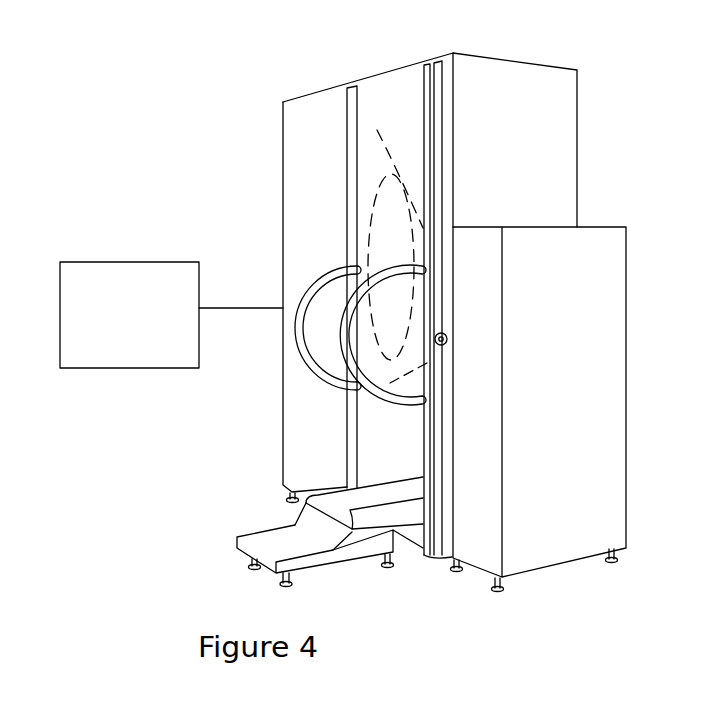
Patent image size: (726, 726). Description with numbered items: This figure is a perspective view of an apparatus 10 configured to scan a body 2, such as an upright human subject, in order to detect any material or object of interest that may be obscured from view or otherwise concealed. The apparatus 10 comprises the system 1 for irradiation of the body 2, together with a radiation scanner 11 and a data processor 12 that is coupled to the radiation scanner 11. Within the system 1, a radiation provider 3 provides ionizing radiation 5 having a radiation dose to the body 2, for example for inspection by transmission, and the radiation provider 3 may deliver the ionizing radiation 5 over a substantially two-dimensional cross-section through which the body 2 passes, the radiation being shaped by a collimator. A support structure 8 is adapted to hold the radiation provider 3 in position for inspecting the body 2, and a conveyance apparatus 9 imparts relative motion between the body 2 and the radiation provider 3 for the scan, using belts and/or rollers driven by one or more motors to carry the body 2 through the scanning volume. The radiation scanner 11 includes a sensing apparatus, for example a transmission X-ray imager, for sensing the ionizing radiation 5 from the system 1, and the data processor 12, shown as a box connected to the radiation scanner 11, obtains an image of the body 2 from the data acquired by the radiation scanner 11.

The system 1 is at (612, 170).
The body 2 is at (467, 305).
The radiation provider 3 is at (572, 350).
The ionizing radiation 5 is at (472, 339).
The support structure 8 is at (511, 87).
The conveyance apparatus 9 is at (318, 495).
The apparatus 10 is at (155, 105).
The radiation scanner 11 is at (296, 216).
The data processor 12 is at (142, 330).